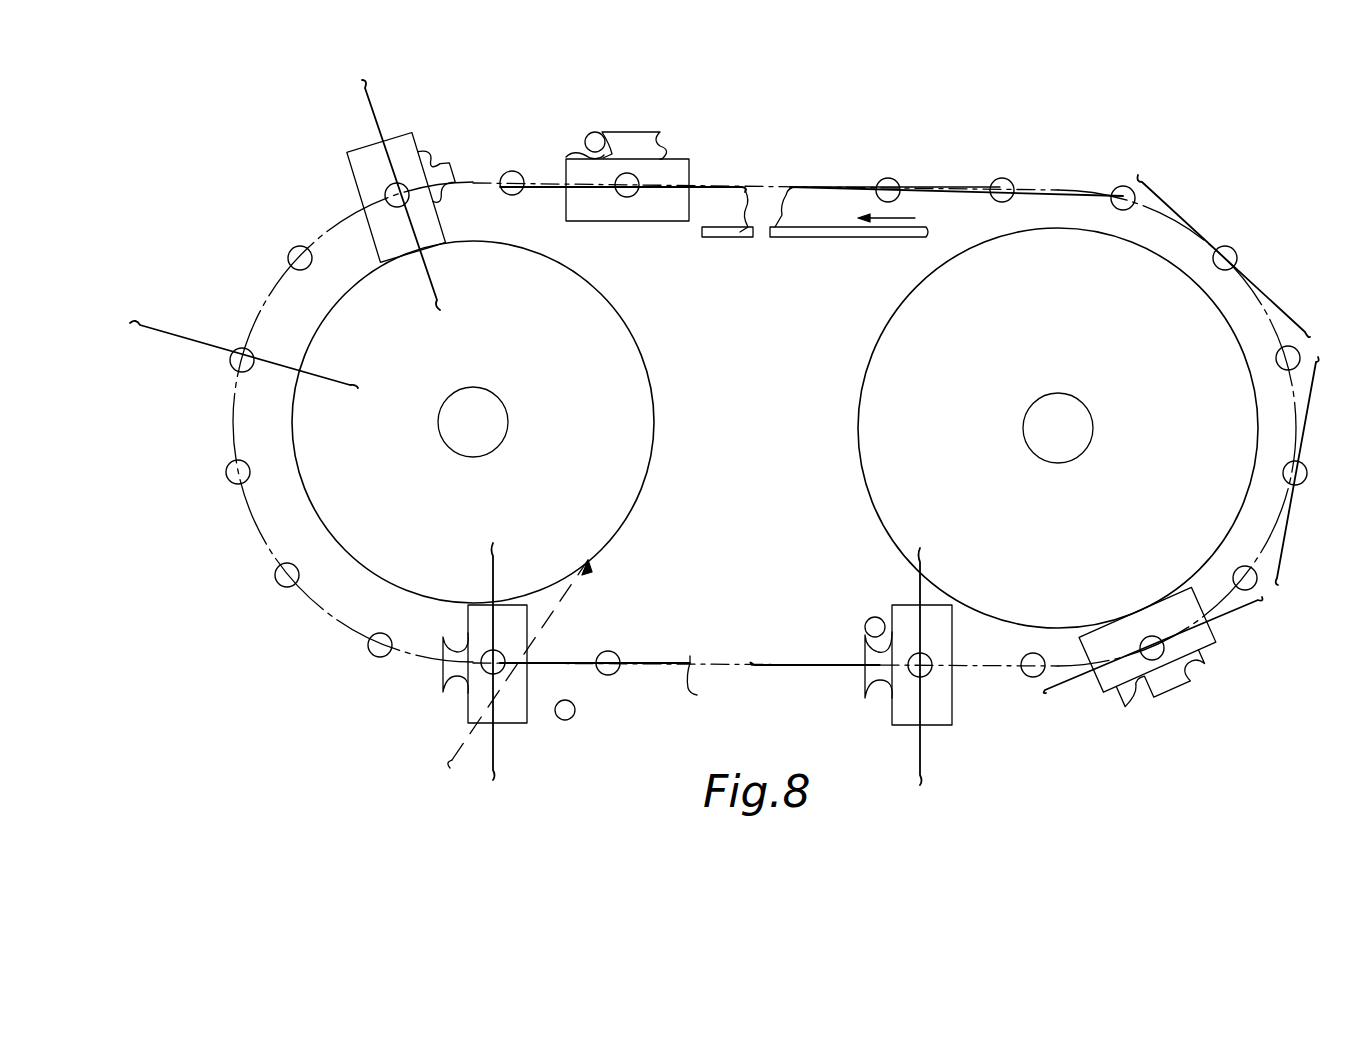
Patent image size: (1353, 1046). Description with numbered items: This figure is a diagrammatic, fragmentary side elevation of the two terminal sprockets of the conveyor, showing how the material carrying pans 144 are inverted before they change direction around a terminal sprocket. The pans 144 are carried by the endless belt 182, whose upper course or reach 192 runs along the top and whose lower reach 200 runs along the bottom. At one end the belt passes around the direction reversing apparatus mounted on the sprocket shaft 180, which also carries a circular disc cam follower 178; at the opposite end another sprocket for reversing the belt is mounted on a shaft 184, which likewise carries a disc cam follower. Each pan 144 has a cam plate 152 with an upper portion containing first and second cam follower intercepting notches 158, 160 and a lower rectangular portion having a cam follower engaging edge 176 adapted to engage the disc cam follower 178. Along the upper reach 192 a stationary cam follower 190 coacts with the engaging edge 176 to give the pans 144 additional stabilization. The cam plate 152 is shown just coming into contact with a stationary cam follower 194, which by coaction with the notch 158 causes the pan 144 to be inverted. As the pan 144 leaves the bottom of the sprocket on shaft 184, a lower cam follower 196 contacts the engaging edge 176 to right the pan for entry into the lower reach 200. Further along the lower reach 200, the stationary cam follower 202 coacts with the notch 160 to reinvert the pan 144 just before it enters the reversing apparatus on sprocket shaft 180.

The material carrying pan 144 is at (712, 187).
The cam plate 152 is at (635, 128).
The first cam follower intercepting notch 158 is at (580, 153).
The second cam follower intercepting notch 160 is at (887, 622).
The cam follower engaging edge 176 is at (630, 225).
The circular disc cam follower 178 is at (875, 470).
The sprocket shaft 180 is at (1075, 440).
The endless belt 182 is at (640, 660).
The shaft 184 is at (483, 410).
The stationary cam follower 190 is at (790, 237).
The upper course or reach 192 is at (808, 185).
The stationary cam follower 194 is at (584, 140).
The lower cam follower 196 is at (575, 711).
The lower reach 200 is at (716, 684).
The stationary cam follower 202 is at (866, 625).